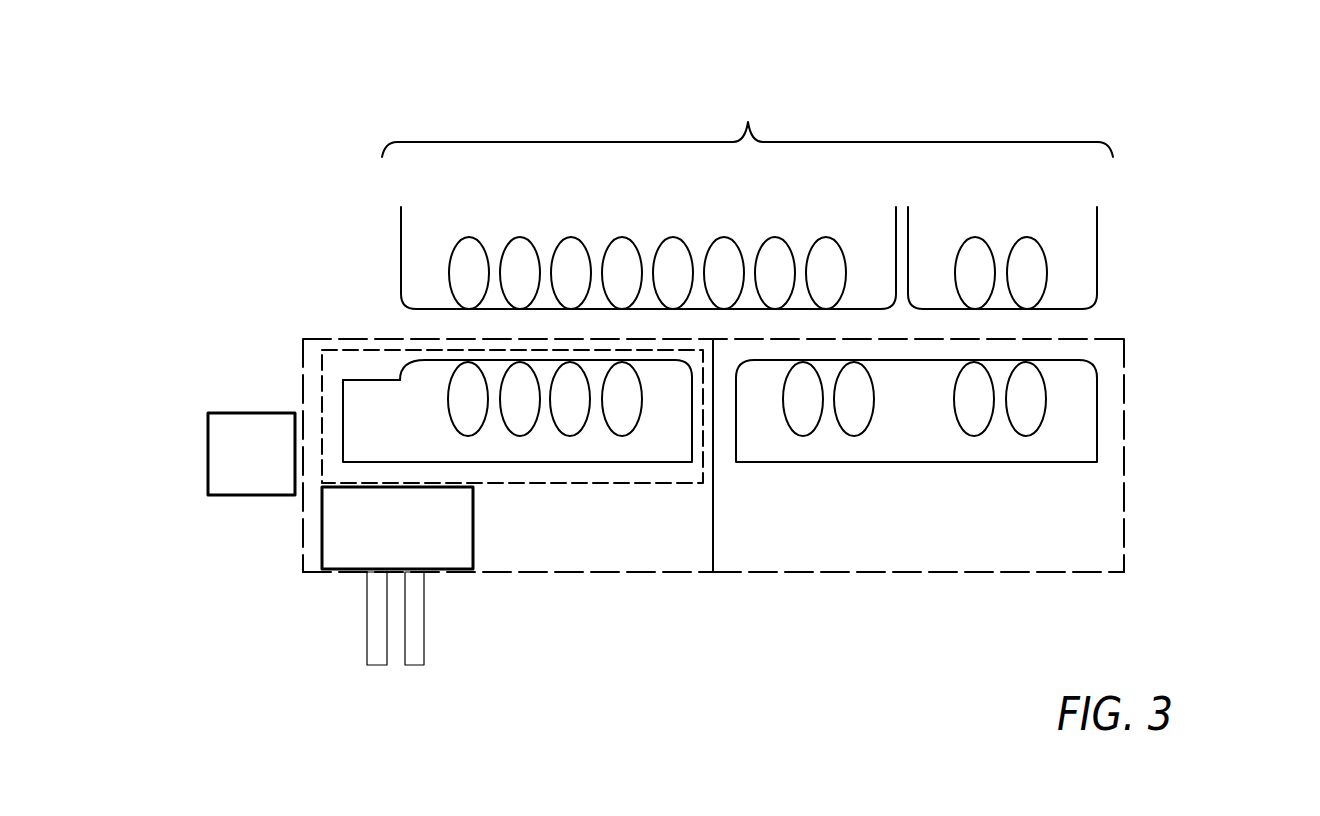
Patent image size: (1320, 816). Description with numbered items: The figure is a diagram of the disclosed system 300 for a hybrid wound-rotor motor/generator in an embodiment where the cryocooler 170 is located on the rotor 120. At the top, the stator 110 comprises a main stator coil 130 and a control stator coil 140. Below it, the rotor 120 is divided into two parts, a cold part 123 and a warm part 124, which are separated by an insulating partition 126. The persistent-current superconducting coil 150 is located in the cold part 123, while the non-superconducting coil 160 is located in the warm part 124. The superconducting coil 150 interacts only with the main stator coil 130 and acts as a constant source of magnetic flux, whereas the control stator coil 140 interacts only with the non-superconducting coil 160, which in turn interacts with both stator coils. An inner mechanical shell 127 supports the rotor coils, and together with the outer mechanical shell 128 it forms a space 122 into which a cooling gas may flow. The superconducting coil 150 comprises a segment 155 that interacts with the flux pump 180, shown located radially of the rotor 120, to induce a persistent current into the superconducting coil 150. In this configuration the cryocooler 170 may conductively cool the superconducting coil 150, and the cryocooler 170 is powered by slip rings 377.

The system 300 is at (238, 122).
The stator 110 is at (747, 125).
The main stator coil 130 is at (526, 212).
The control stator coil 140 is at (1009, 218).
The rotor 120 is at (1136, 440).
The space 122 is at (615, 553).
The cold part 123 is at (648, 535).
The warm part 124 is at (925, 542).
The insulating partition 126 is at (713, 472).
The inner mechanical shell 127 is at (582, 482).
The outer mechanical shell 128 is at (1124, 532).
The persistent-current superconducting coil 150 is at (428, 360).
The segment 155 is at (343, 395).
The non-superconducting coil 160 is at (1084, 350).
The cryocooler 170 is at (322, 530).
The slip rings 377 is at (375, 630).
The flux pump 180 is at (208, 456).